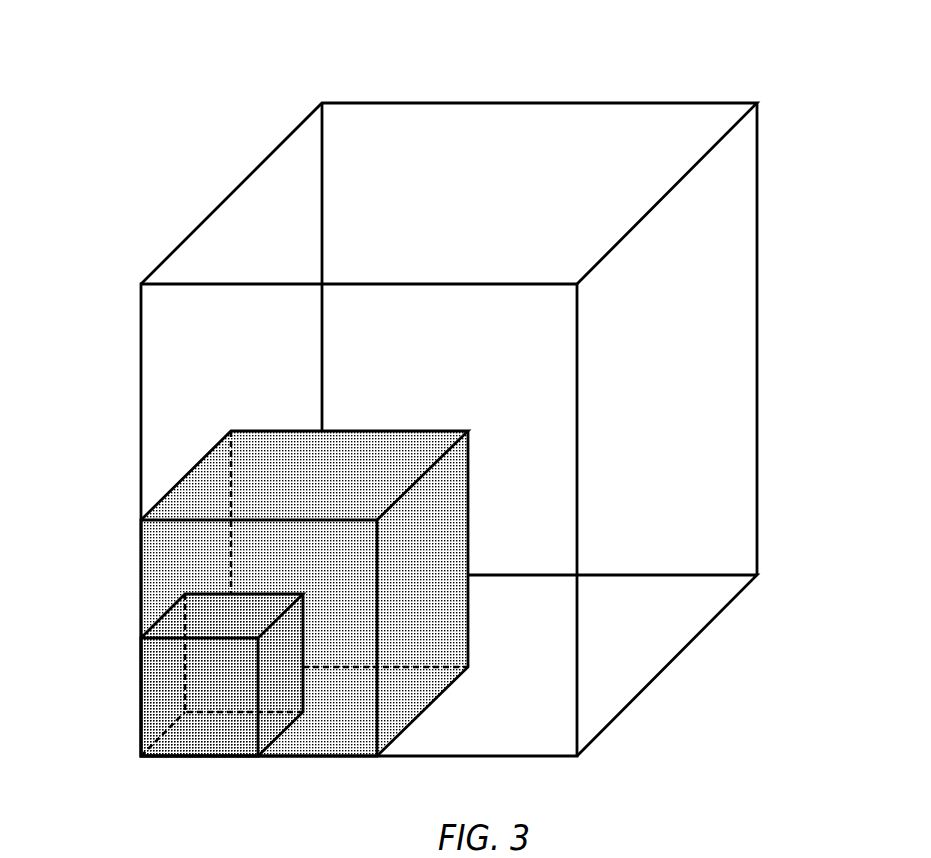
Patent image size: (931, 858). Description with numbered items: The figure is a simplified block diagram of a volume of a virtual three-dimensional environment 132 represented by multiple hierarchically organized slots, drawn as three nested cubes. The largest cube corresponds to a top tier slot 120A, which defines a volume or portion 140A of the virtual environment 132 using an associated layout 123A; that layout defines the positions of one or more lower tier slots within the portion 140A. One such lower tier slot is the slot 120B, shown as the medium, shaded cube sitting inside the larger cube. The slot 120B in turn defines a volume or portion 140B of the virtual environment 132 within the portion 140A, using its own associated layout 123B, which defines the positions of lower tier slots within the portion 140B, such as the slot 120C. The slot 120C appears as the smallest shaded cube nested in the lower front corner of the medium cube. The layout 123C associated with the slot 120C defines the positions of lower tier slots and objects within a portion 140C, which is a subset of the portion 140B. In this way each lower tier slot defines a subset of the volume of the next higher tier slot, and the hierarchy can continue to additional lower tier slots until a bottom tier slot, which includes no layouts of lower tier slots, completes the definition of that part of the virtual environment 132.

The virtual 3D environment 132 is at (176, 60).
The layout 123A is at (196, 186).
The top tier slot 120A is at (727, 227).
The portion of the 3D environment 140A is at (737, 313).
The layout 123B is at (352, 434).
The lower tier slot 120B is at (269, 438).
The portion of the 3D environment 140B is at (443, 608).
The layout 123C is at (156, 719).
The lower tier slot 120C is at (202, 742).
The portion of the 3D environment 140C is at (282, 684).